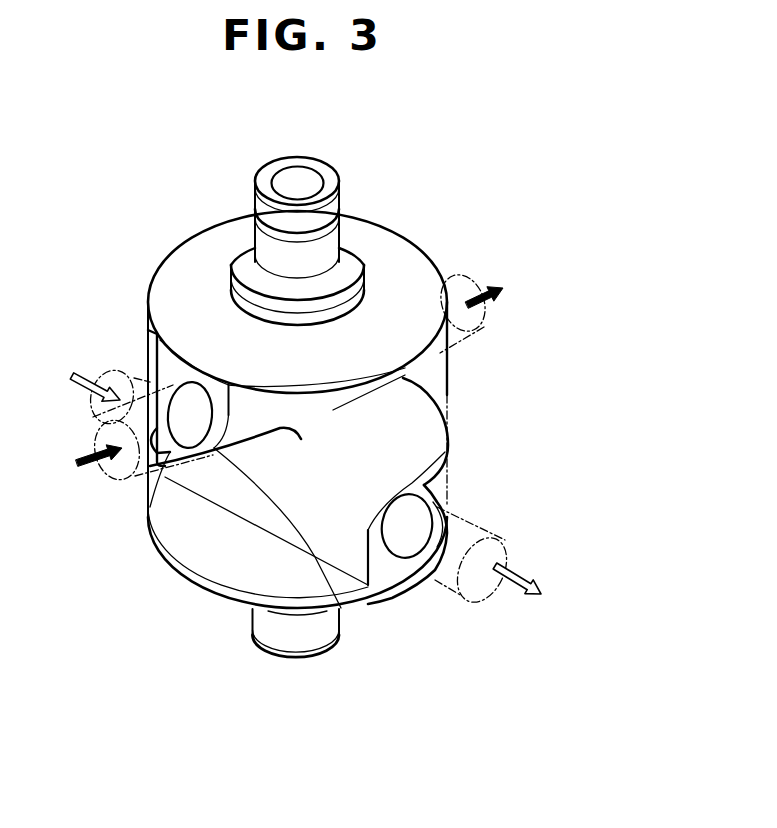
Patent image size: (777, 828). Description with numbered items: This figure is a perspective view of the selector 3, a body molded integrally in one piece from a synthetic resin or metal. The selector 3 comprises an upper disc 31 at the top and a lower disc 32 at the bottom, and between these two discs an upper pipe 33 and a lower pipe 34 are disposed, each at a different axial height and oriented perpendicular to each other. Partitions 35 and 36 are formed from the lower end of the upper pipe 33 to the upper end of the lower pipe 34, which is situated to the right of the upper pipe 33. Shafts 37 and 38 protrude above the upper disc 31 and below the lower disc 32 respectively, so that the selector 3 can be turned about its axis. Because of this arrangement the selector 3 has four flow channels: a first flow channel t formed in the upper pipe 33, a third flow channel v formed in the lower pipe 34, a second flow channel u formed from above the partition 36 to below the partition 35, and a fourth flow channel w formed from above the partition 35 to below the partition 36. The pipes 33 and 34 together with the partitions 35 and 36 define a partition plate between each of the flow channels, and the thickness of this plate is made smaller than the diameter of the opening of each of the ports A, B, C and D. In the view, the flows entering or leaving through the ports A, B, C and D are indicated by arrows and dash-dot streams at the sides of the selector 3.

The selector 3 is at (569, 360).
The upper disc 31 is at (367, 247).
The lower disc 32 is at (225, 602).
The upper pipe 33 is at (243, 403).
The lower pipe 34 is at (433, 493).
The partition 35 is at (448, 443).
The partition 36 is at (165, 478).
The shaft 37 is at (343, 200).
The shaft 38 is at (310, 652).
The second flow channel u is at (148, 332).
The third flow channel v is at (408, 542).
The fourth flow channel w is at (207, 547).
The first flow channel t is at (343, 610).
The port A is at (94, 480).
The port B is at (507, 542).
The port C is at (453, 275).
The port D is at (118, 367).